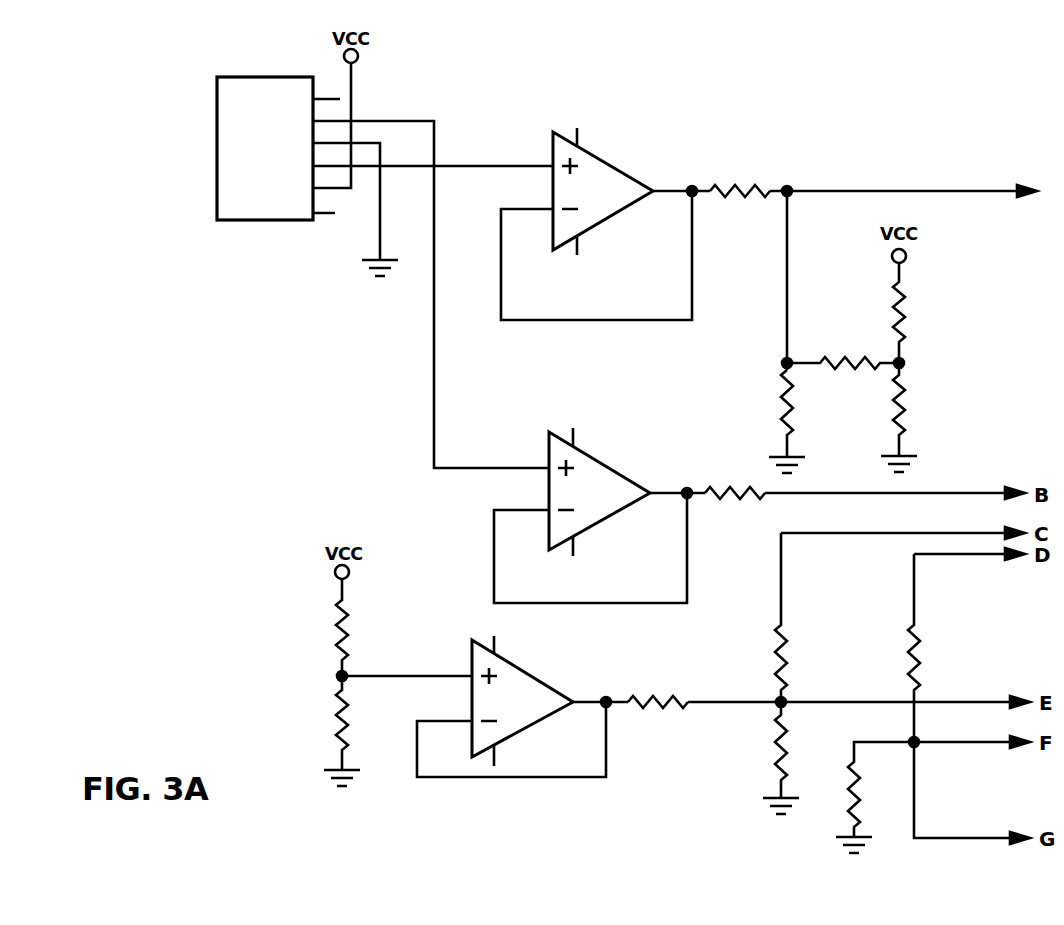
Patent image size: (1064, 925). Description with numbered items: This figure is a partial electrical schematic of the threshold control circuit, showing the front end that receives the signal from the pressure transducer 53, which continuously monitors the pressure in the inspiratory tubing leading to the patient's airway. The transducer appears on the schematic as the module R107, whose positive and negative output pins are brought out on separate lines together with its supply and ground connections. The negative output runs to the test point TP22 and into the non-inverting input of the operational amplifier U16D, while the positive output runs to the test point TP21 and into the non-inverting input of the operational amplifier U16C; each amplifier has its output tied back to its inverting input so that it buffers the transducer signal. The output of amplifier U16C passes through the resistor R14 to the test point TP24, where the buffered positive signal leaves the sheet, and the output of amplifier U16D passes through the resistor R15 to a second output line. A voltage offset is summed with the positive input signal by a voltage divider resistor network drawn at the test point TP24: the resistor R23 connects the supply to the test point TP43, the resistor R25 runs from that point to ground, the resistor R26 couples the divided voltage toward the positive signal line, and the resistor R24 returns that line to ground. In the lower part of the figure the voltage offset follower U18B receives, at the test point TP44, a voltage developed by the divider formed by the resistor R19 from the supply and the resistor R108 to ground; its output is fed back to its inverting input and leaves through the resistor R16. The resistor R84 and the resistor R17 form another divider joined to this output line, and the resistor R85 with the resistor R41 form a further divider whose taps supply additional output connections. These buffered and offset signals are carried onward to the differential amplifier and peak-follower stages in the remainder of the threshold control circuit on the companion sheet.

The pressure transducer 53 is at (197, 148).
The pressure transducer module R107 is at (278, 148).
The operational amplifier U16C is at (605, 224).
The operational amplifier U16D is at (599, 515).
The voltage offset follower U18B is at (522, 706).
The resistor 1K R14 is at (740, 191).
The resistor 1K R15 is at (735, 492).
The resistor 10K R16 is at (658, 702).
The resistor 10K R17 is at (763, 758).
The resistor 8.2K R19 is at (370, 627).
The resistor 8.2K R23 is at (876, 313).
The resistor 470K R24 is at (765, 421).
The resistor 2.7K R25 is at (880, 417).
The resistor 470K R26 is at (843, 368).
The resistor 10K R41 is at (862, 797).
The resistor 10K R84 is at (761, 617).
The resistor 10K R85 is at (894, 648).
The resistor 1K R108 is at (321, 731).
The test point 21 TP21 is at (433, 155).
The test point 22 TP22 is at (431, 294).
The test point 24 TP24 is at (915, 186).
The test point 43 TP43 is at (928, 357).
The test point 44 TP44 is at (407, 664).